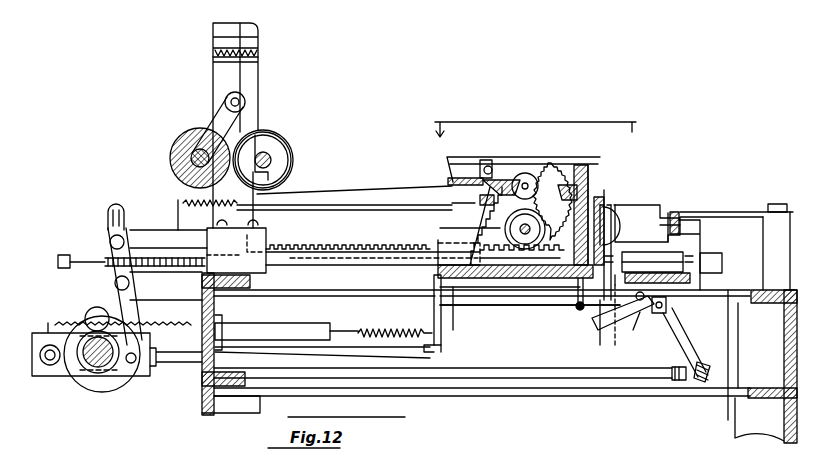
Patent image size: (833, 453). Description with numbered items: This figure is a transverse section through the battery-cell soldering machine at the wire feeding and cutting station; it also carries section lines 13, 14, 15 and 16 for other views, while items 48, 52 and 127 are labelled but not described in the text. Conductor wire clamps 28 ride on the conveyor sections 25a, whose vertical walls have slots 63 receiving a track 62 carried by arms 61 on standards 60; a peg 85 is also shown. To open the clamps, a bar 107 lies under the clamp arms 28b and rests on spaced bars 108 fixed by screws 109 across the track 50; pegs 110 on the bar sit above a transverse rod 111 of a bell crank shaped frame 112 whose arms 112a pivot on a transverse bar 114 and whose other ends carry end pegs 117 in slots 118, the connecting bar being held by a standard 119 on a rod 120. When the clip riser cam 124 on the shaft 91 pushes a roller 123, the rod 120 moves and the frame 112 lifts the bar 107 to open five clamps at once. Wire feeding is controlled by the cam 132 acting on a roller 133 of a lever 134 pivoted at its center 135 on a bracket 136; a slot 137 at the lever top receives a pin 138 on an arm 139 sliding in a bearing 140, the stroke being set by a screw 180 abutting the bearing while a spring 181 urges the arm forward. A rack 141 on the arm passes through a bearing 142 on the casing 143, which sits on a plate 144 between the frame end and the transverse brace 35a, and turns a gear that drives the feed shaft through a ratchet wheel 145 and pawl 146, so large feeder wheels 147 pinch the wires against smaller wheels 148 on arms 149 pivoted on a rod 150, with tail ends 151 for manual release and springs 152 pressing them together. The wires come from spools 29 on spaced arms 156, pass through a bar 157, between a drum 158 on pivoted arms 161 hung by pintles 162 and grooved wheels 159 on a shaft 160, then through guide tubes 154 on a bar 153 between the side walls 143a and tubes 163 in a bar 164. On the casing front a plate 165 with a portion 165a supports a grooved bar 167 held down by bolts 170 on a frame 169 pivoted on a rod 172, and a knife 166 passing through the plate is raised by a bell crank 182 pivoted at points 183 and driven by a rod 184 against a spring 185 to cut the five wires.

The section line 13 is at (630, 341).
The section line 14 is at (596, 345).
The section line 15 is at (710, 410).
The section line 16 is at (538, 120).
The conveyor section 25a is at (652, 228).
The conductor wire clamp 28 is at (538, 449).
The vertical arm of clamp 28b is at (640, 225).
The roll of conductor wire 29 is at (293, 154).
The transverse arm of frame 35a is at (300, 290).
The bearing plate 48 is at (692, 284).
The track 50 is at (672, 300).
The bolt 52 is at (700, 255).
The standard 60 is at (772, 230).
The arm 61 is at (718, 213).
The track 62 is at (676, 213).
The slot 63 is at (688, 226).
The peg 85 is at (714, 262).
The shaft 91 is at (92, 356).
The bar 107 is at (649, 262).
The spaced bar 108 is at (675, 300).
The screw 109 is at (652, 262).
The peg 110 is at (590, 308).
The transverse rod 111 is at (630, 316).
The bell crank shaped frame 112 is at (648, 318).
The bell crank shaped arm 112a is at (636, 297).
The transverse bar 114 is at (658, 321).
The end peg 117 is at (705, 376).
The slot 118 is at (716, 360).
The standard 119 is at (690, 376).
The rod 120 is at (528, 370).
The roller 123 is at (50, 365).
The clip riser cam 124 is at (113, 392).
The crank 127 is at (600, 322).
The cam 132 is at (92, 318).
The roller 133 is at (164, 376).
The lever 134 is at (125, 298).
The pivot center 135 is at (127, 288).
The bracket 136 is at (175, 285).
The slot 137 is at (117, 210).
The pin 138 is at (109, 236).
The arm 139 is at (150, 240).
The bearing 140 is at (258, 245).
The rack 141 is at (337, 248).
The supporting bearing 142 is at (440, 262).
The casing 143 is at (545, 222).
The side wall 143a is at (448, 205).
The plate 144 is at (436, 290).
The ratchet wheel 145 is at (535, 232).
The pawl 146 is at (528, 195).
The large wire feeder wheel 147 is at (532, 222).
The smaller wheel 148 is at (525, 173).
The arm 149 is at (500, 185).
The rod 150 is at (485, 178).
The tail end 151 is at (455, 178).
The spring 152 is at (470, 283).
The bar 153 is at (488, 190).
The guide tube 154 is at (415, 190).
The spaced arm 156 is at (218, 42).
The bar 157 is at (258, 50).
The solid surface drum 158 is at (186, 135).
The grooved wheel 159 is at (265, 150).
The shaft 160 is at (270, 158).
The pivotally mounted arm 161 is at (222, 116).
The pintle 162 is at (240, 100).
The tube 163 is at (578, 180).
The bar 164 is at (596, 170).
The plate 165 is at (550, 280).
The plate portion 165a is at (598, 188).
The cutting blade 166 is at (572, 300).
The bar 167 is at (597, 182).
The frame 169 is at (562, 188).
The bolt 170 is at (598, 165).
The rod 172 is at (488, 165).
The screw 180 is at (72, 262).
The spring 181 is at (196, 201).
The bell crank 182 is at (437, 346).
The pivot point 183 is at (434, 300).
The rod 184 is at (396, 352).
The spring 185 is at (354, 330).